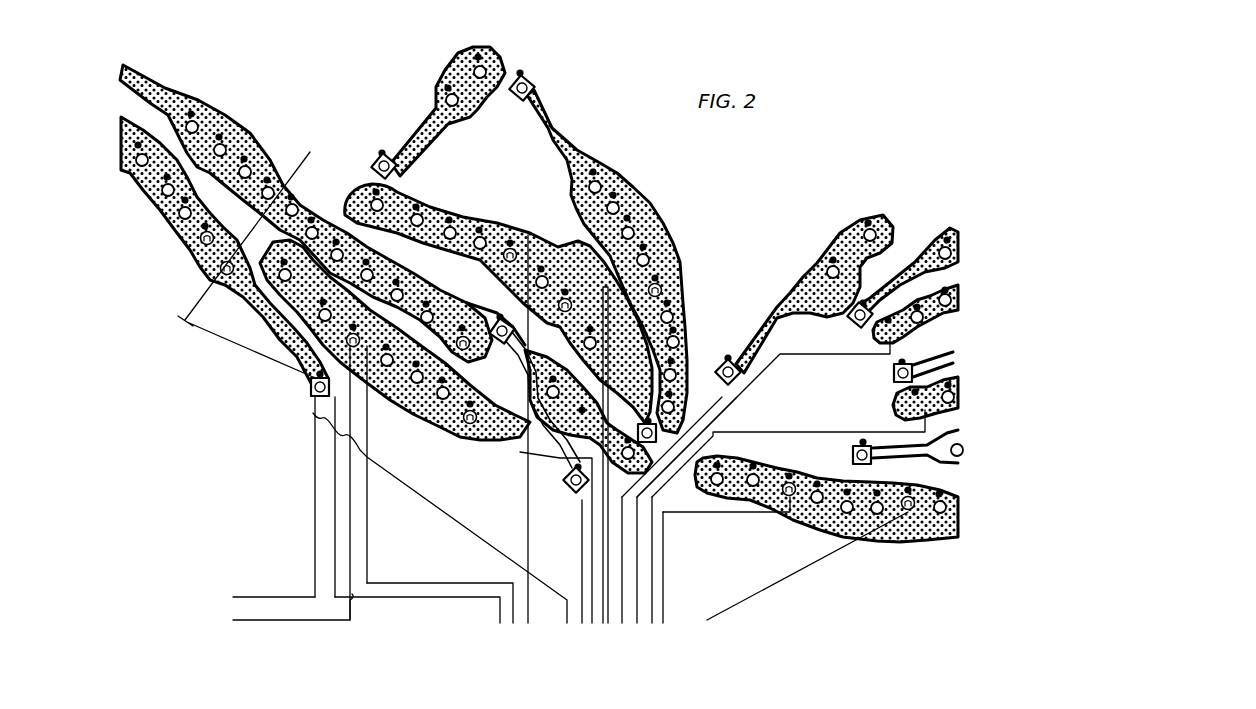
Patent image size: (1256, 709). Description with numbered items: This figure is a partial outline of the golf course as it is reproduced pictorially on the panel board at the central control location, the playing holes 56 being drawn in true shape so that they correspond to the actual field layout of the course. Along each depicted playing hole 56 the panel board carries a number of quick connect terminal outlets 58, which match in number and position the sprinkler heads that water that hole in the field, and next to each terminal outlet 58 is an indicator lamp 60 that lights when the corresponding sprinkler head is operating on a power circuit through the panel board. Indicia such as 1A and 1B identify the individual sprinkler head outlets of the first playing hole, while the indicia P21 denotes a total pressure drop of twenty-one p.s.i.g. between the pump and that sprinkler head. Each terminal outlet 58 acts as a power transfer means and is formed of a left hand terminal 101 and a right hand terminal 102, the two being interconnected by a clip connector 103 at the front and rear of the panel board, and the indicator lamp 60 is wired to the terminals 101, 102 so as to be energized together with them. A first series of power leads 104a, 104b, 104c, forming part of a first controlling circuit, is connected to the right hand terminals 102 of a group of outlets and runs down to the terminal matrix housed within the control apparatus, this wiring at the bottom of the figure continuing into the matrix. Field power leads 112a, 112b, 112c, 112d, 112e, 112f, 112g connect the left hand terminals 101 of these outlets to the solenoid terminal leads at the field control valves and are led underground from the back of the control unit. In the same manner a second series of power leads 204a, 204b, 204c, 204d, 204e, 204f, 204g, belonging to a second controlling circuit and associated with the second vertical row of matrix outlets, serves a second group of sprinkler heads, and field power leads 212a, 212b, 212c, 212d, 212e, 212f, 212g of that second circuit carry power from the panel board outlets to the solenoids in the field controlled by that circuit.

The playing holes 56 is at (440, 210).
The quick connect terminal outlets 58 is at (224, 148).
The indicator lamp 60 is at (365, 262).
The left hand terminal 101 is at (203, 237).
The right hand terminal 102 is at (245, 320).
The clip connector 103 is at (172, 258).
The power lead 104a is at (487, 600).
The power lead 104b is at (423, 583).
The power lead 104c is at (557, 556).
The field power lead 112a is at (313, 474).
The field power lead 112b is at (350, 500).
The field power lead 112c is at (481, 293).
The field power lead 112d is at (718, 376).
The field power lead 112e is at (870, 334).
The field power lead 112f is at (896, 409).
The field power lead 112g is at (789, 484).
The power lead 204a is at (424, 497).
The power lead 204b is at (542, 460).
The power lead 204c is at (580, 495).
The power lead 204d is at (603, 532).
The power lead 204e is at (608, 563).
The power lead 204f is at (615, 592).
The power lead 204g is at (810, 570).
The field power lead 212a is at (185, 257).
The field power lead 212b is at (452, 434).
The field power lead 212c is at (456, 348).
The field power lead 212d is at (562, 486).
The field power lead 212e is at (562, 300).
The field power lead 212f is at (626, 312).
The field power lead 212g is at (862, 540).
The pressure drop indicia P21 is at (345, 343).
The sprinkler head indicia 1A is at (527, 453).
The sprinkler head indicia 1B is at (440, 400).